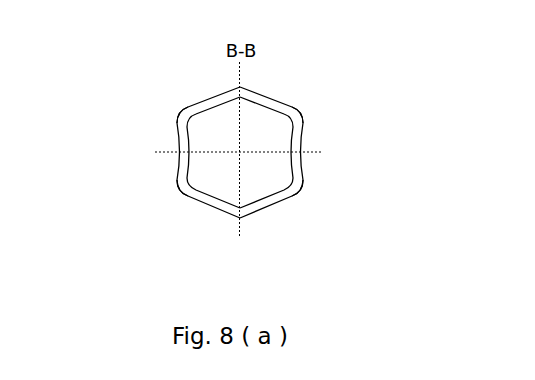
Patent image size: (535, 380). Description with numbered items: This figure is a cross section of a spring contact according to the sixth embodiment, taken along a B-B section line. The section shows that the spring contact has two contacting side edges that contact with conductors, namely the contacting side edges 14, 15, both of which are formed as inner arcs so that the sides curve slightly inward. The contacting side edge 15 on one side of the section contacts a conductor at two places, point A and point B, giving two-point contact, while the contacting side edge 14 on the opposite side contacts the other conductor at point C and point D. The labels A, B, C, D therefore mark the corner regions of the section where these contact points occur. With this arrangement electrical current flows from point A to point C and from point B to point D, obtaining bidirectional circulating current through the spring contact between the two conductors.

The contacting side edge 14 is at (178, 127).
The contacting side edge 15 is at (303, 127).
The point A is at (304, 119).
The point B is at (328, 197).
The point C is at (176, 120).
The point D is at (175, 184).